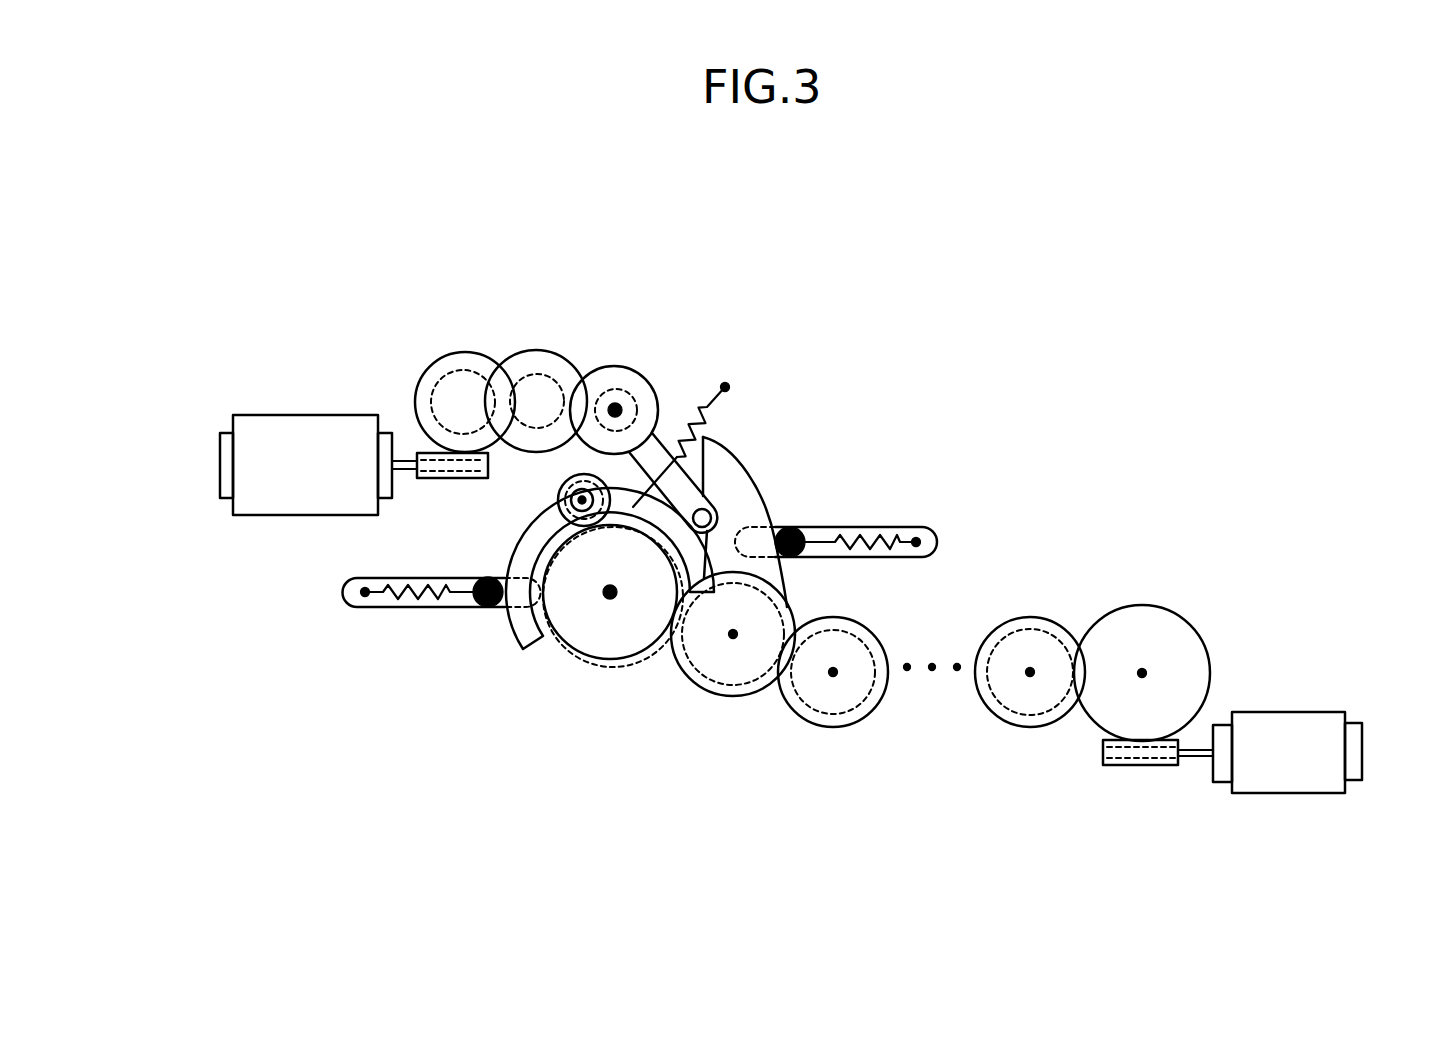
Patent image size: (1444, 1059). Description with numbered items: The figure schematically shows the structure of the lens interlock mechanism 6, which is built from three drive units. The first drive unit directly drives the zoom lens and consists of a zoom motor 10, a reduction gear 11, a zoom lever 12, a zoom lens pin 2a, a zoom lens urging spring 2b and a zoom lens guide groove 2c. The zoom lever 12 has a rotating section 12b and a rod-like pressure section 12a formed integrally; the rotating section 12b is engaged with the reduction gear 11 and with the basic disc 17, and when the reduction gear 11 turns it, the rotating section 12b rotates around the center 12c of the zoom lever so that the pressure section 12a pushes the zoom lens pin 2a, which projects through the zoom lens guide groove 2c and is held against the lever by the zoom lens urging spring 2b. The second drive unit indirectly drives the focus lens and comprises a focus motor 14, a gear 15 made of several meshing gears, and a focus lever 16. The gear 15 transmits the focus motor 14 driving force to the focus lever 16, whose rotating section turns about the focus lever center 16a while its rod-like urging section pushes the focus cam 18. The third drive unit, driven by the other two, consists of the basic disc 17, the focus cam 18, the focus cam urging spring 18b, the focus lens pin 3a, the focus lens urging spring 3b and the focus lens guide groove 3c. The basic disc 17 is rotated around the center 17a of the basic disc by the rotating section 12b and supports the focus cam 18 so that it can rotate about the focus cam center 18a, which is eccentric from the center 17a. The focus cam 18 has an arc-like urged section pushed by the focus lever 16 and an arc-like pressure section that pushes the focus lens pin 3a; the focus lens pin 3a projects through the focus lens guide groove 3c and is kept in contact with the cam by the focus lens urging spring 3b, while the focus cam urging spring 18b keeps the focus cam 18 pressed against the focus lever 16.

The lens interlock mechanism 6 is at (1104, 238).
The zoom motor 10 is at (1270, 793).
The reduction gear 11 is at (1007, 722).
The zoom lever 12 is at (747, 463).
The pressure section 12a is at (770, 504).
The rotating section 12b is at (750, 677).
The center of the zoom lever 12c is at (735, 632).
The focus motor 14 is at (268, 415).
The gear 15 is at (513, 348).
The focus lever 16 is at (617, 367).
The focus lever center 16a is at (617, 410).
The basic disc 17 is at (605, 632).
The center of the basic disc 17a is at (610, 592).
The focus cam 18 is at (503, 565).
The focus cam center 18a is at (578, 500).
The focus cam urging spring 18b is at (735, 406).
The zoom lens pin 2a is at (793, 528).
The zoom lens urging spring 2b is at (920, 538).
The zoom lens guide groove 2c is at (937, 543).
The focus lens pin 3a is at (473, 606).
The focus lens urging spring 3b is at (383, 603).
The focus lens guide groove 3c is at (363, 608).